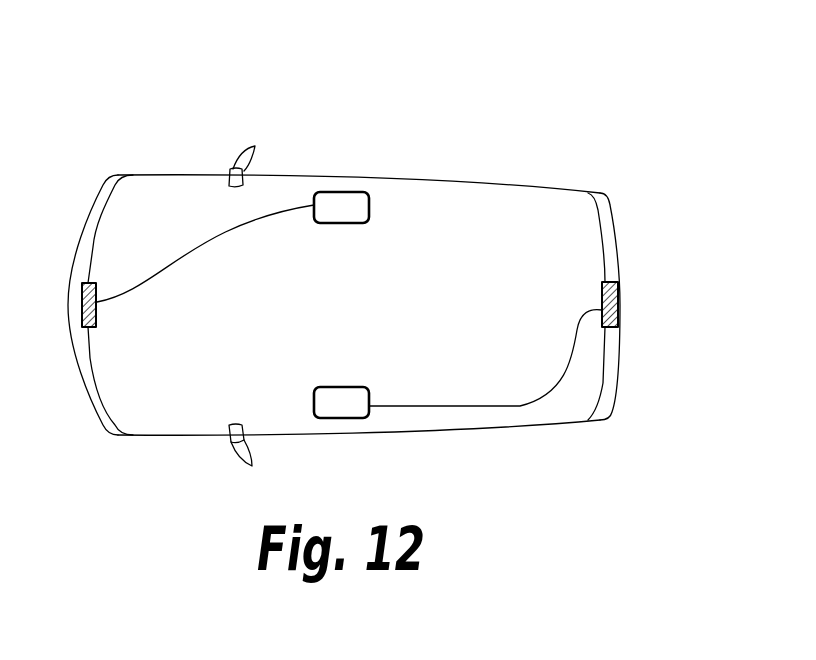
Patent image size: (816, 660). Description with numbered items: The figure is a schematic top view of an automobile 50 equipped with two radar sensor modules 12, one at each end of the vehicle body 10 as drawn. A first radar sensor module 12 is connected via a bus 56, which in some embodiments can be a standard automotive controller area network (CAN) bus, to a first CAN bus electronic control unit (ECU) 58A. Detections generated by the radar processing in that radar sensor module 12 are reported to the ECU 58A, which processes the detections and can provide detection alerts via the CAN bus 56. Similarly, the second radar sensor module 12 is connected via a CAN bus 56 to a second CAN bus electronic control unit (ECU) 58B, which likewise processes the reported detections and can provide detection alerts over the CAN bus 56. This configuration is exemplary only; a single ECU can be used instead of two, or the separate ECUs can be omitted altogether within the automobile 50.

The vehicle 10 is at (513, 242).
The automobile 50 is at (183, 138).
The radar sensor module 12 is at (97, 312).
The bus 56 is at (207, 245).
The first CAN bus electronic control unit 58A is at (345, 213).
The second CAN bus electronic control unit 58B is at (337, 395).